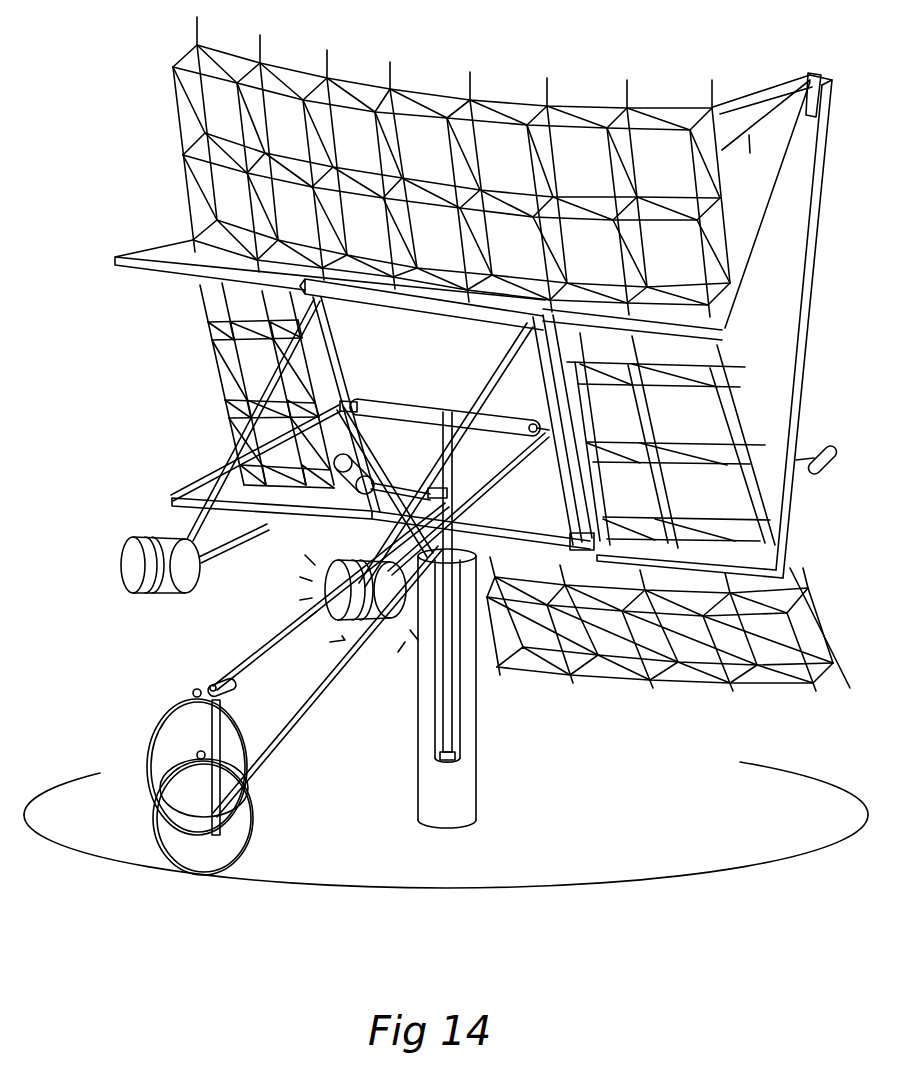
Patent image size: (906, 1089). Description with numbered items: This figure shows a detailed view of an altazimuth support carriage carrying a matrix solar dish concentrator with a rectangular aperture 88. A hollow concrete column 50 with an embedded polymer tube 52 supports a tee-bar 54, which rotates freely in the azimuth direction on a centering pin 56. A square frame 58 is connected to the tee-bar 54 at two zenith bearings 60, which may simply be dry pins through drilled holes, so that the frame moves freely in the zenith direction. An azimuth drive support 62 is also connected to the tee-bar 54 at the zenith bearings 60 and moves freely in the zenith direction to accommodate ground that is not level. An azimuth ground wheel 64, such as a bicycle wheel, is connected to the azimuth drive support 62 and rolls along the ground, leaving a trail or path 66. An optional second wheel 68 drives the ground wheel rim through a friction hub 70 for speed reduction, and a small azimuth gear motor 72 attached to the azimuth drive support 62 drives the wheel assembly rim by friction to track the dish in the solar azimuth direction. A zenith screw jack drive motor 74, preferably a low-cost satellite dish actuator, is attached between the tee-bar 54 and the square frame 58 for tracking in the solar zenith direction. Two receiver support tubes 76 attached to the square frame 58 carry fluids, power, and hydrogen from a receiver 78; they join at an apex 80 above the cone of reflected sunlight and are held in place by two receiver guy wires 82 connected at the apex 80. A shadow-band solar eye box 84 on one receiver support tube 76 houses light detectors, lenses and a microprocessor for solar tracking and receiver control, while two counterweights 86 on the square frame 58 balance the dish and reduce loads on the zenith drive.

The hollow concrete column 50 is at (478, 826).
The embedded polymer tube 52 is at (462, 741).
The tee-bar 54 is at (408, 412).
The centering pin 56 is at (452, 764).
The square frame 58 is at (450, 320).
The zenith bearings 60 is at (444, 402).
The azimuth drive support 62 is at (350, 688).
The azimuth ground wheel 64 is at (257, 819).
The trail or path 66 is at (400, 888).
The second wheel 68 is at (140, 753).
The friction hub 70 is at (203, 753).
The azimuth gear motor 72 is at (208, 681).
The zenith screw jack drive motor 74 is at (383, 483).
The receiver support tubes 76 is at (178, 238).
The receiver 78 is at (803, 83).
The apex 80 is at (830, 77).
The receiver guy wires 82 is at (795, 158).
The shadow-band solar eye box 84 is at (830, 473).
The counterweights 86 is at (212, 578).
The rectangular aperture 88 is at (447, 88).